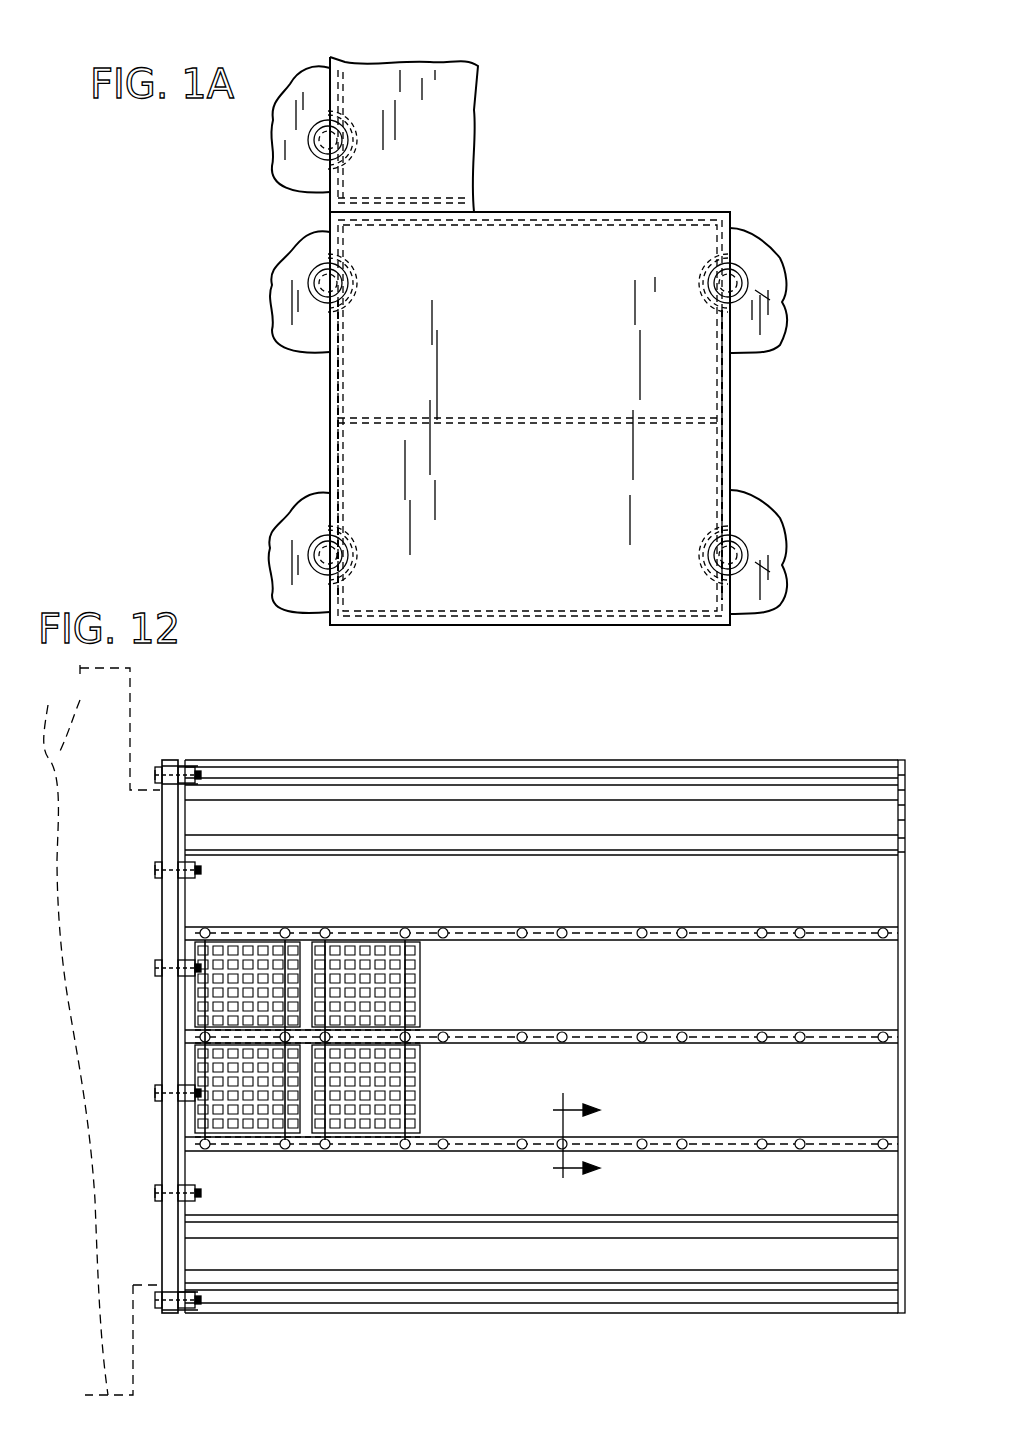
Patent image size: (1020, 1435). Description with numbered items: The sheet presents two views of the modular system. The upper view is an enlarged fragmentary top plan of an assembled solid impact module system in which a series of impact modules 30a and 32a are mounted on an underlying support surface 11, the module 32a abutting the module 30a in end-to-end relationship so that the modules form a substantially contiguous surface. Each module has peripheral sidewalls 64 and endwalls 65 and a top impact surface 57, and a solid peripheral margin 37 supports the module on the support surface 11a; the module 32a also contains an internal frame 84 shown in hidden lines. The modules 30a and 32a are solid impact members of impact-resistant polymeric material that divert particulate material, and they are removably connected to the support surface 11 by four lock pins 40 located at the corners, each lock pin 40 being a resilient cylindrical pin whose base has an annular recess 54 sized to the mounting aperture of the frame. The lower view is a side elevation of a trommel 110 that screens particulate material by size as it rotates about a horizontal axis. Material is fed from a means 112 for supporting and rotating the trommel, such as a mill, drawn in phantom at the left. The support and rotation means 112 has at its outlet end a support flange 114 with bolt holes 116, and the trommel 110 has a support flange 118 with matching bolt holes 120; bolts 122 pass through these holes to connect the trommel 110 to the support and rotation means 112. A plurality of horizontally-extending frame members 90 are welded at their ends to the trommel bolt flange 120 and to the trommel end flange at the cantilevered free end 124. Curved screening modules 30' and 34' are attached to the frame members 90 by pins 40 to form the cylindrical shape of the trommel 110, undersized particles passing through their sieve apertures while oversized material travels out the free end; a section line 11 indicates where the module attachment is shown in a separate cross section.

In FIG. 1A, the support surface 11a is at (308, 146).
In FIG. 1A, the impact module 30a is at (602, 207).
In FIG. 1A, the impact module 32a is at (484, 103).
In FIG. 1A, the solid peripheral margin 37 is at (548, 603).
In FIG. 1A, the lock pin 40 is at (318, 268).
In FIG. 12, the lock pin 40 is at (285, 928).
In FIG. 1A, the annular recess 54 is at (772, 300).
In FIG. 1A, the top impact surface 57 is at (447, 110).
In FIG. 1A, the peripheral sidewalls 64 is at (330, 405).
In FIG. 1A, the endwalls 65 is at (419, 211).
In FIG. 1A, the internal frame 84 is at (735, 432).
In FIG. 12, the frame members 90 is at (640, 778).
In FIG. 12, the trommel 110 is at (458, 1328).
In FIG. 12, the support and rotation means 112 is at (97, 1030).
In FIG. 12, the support flange 114 is at (165, 940).
In FIG. 12, the bolt holes 116 is at (172, 766).
In FIG. 12, the support flange 118 is at (190, 818).
In FIG. 12, the bolt holes 120 is at (180, 767).
In FIG. 12, the bolts 122 is at (155, 868).
In FIG. 12, the free end 124 is at (900, 1316).
In FIG. 12, the curved screening module 30' is at (277, 1038).
In FIG. 12, the curved screening module 34' is at (282, 1025).
In FIG. 12, the underlying support surface 11 is at (565, 1141).